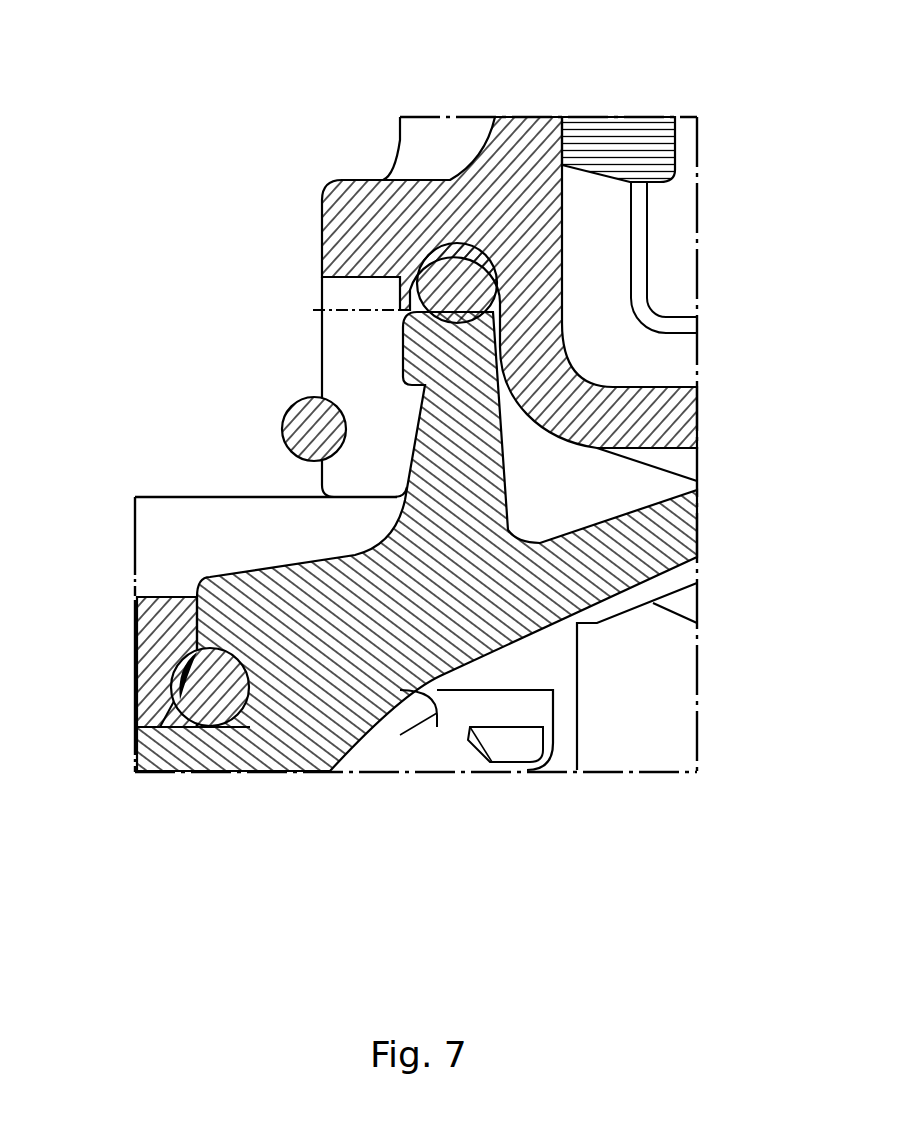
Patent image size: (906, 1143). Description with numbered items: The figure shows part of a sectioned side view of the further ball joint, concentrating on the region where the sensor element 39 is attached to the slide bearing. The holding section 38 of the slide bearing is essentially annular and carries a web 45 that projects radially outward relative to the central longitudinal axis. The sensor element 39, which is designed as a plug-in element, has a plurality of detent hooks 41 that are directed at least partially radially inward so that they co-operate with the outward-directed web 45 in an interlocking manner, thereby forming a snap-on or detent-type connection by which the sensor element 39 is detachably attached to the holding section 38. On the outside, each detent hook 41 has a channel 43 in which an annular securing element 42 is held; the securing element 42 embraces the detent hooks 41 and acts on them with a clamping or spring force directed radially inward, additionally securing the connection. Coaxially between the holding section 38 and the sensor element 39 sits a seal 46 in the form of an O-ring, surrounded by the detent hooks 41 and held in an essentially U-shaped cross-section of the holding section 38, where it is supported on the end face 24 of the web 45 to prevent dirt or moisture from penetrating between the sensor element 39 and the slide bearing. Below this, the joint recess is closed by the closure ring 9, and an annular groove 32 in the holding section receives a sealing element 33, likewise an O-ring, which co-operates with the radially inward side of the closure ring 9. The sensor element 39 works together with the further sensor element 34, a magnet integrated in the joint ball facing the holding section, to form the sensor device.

The closure ring 9 is at (165, 597).
The end face 24 is at (470, 305).
The annular groove 32 is at (257, 718).
The sealing element 33 is at (210, 705).
The further sensor element 34 is at (672, 699).
The holding section 38 is at (343, 518).
The sensor element 39 is at (607, 100).
The detent hooks 41 is at (343, 368).
The securing element 42 is at (282, 430).
The channel 43 is at (352, 462).
The web 45 is at (423, 347).
The seal 46 is at (450, 283).